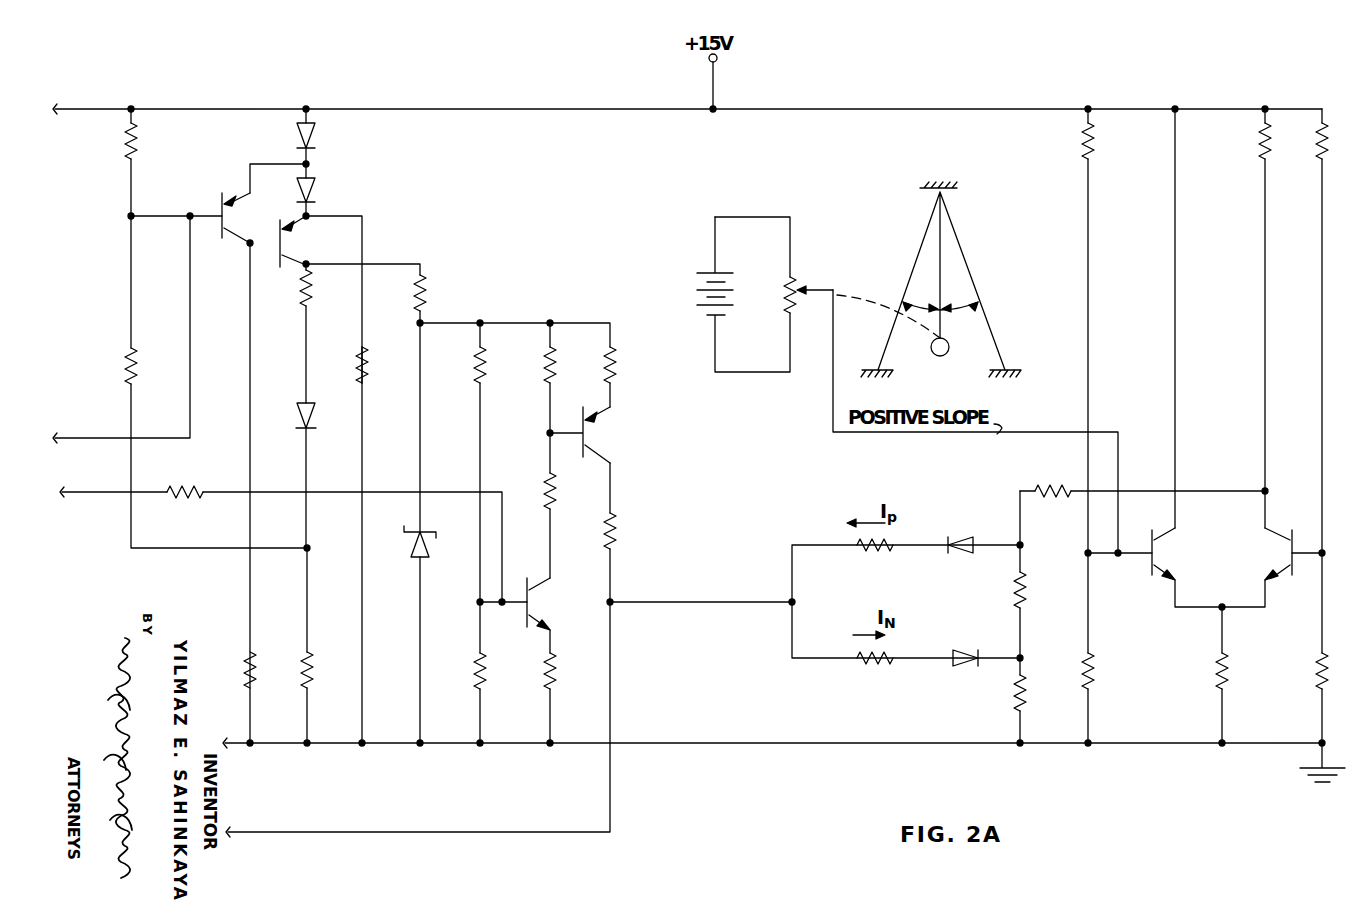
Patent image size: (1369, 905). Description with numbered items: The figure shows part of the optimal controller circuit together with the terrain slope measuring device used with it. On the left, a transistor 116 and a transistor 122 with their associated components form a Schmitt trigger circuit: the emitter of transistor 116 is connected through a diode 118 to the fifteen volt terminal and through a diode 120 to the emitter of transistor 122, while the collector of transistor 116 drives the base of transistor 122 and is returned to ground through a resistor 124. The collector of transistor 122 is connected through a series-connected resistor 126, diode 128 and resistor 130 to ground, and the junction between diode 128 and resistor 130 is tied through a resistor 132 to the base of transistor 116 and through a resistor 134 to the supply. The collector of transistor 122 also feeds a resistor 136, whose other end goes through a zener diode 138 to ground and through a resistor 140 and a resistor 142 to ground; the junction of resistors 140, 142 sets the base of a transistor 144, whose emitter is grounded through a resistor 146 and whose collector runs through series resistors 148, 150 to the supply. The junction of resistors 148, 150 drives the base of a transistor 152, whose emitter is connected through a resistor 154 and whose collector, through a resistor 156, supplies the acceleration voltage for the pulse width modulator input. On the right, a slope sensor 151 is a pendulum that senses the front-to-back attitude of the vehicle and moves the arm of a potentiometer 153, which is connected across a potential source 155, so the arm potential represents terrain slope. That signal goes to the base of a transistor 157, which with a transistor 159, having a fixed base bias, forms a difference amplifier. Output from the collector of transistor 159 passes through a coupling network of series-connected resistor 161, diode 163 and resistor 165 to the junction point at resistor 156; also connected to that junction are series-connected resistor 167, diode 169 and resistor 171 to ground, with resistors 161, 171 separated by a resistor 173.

The transistor 116 is at (224, 219).
The diode 118 is at (312, 132).
The diode 120 is at (312, 188).
The transistor 122 is at (282, 246).
The resistor 124 is at (251, 668).
The resistor 126 is at (318, 290).
The diode 128 is at (296, 407).
The resistor 130 is at (308, 668).
The resistor 132 is at (134, 374).
The resistor 134 is at (134, 148).
The resistor 136 is at (424, 304).
The zener diode 138 is at (416, 540).
The resistor 140 is at (484, 366).
The resistor 142 is at (484, 670).
The transistor 144 is at (530, 606).
The resistor 146 is at (554, 670).
The resistor 148 is at (562, 490).
The resistor 150 is at (554, 366).
The slope sensor 151 is at (928, 280).
The transistor 152 is at (586, 437).
The potentiometer 153 is at (796, 284).
The resistor 154 is at (614, 366).
The potential source 155 is at (699, 272).
The resistor 156 is at (616, 534).
The transistor 157 is at (1156, 557).
The transistor 159 is at (1288, 559).
The resistor 161 is at (1041, 483).
The diode 163 is at (962, 536).
The resistor 165 is at (880, 552).
The resistor 167 is at (880, 666).
The diode 169 is at (970, 666).
The resistor 171 is at (1024, 682).
The resistor 173 is at (1024, 580).